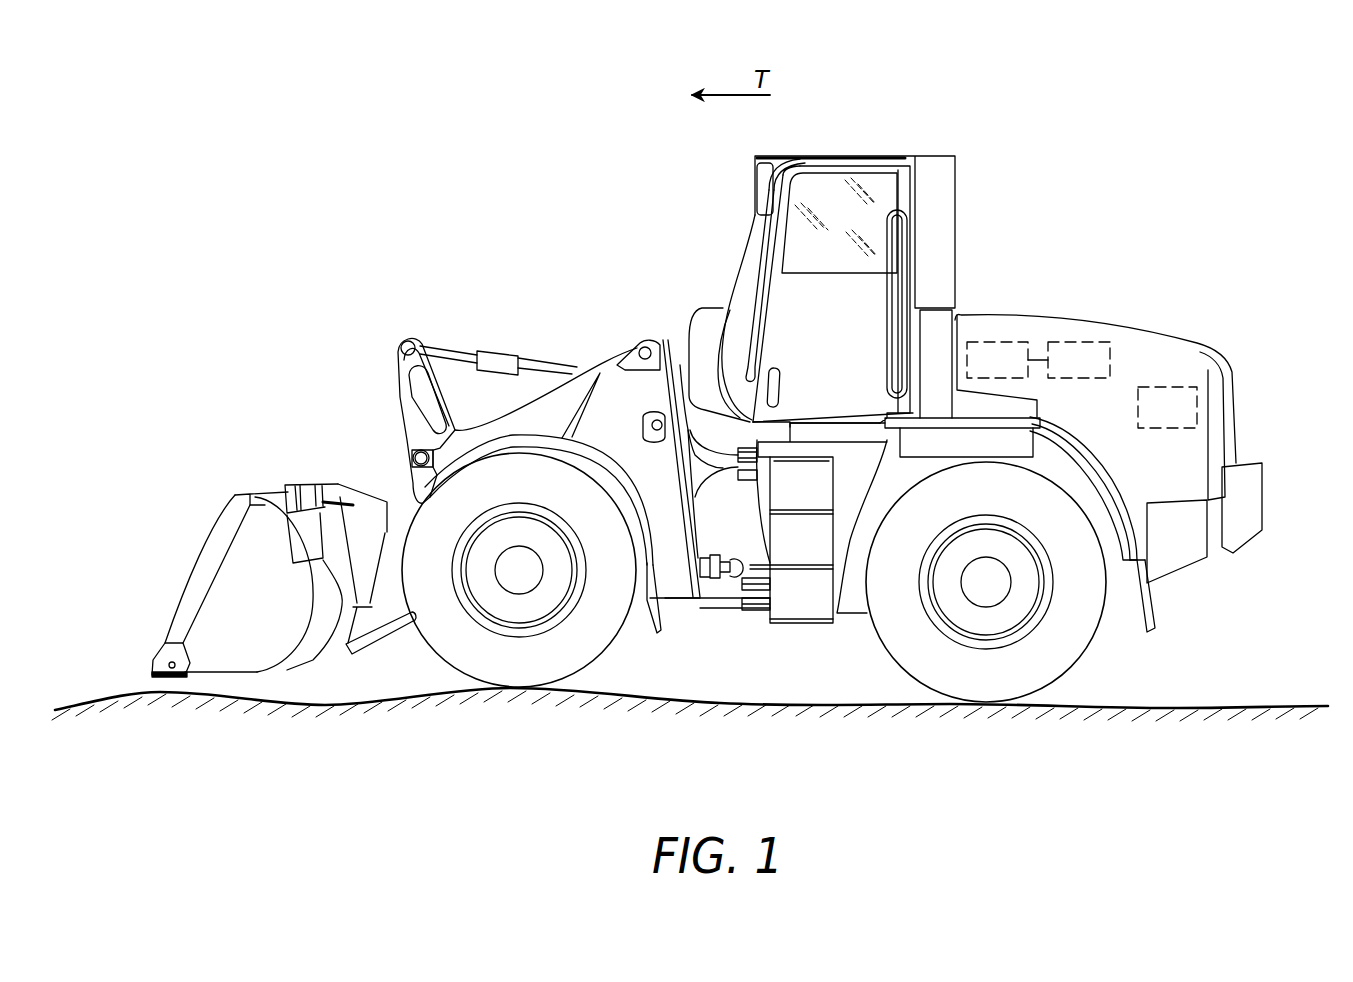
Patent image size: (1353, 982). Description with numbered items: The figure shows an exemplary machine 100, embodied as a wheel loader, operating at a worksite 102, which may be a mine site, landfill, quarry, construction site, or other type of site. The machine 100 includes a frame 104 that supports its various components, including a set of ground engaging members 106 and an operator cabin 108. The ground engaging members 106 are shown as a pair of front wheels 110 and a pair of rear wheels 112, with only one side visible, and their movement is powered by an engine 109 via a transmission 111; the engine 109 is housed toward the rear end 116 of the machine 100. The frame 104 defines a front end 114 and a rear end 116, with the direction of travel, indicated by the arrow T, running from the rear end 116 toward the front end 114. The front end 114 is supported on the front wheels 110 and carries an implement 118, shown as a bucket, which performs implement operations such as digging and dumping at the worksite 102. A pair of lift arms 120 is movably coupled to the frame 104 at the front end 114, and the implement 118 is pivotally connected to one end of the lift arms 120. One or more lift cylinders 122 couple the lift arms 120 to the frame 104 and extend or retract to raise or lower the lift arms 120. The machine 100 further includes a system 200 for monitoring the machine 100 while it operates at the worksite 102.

The machine 100 is at (1186, 103).
The worksite 102 is at (1286, 698).
The frame 104 is at (849, 618).
The ground engaging members 106 is at (622, 642).
The operator cabin 108 is at (868, 152).
The engine 109 is at (997, 360).
The front wheels 110 is at (592, 664).
The transmission 111 is at (1079, 360).
The rear wheels 112 is at (1071, 673).
The front end 114 is at (575, 308).
The rear end 116 is at (1237, 342).
The implement 118 is at (241, 486).
The lift arms 120 is at (383, 596).
The lift cylinders 122 is at (518, 364).
The system 200 is at (1167, 407).